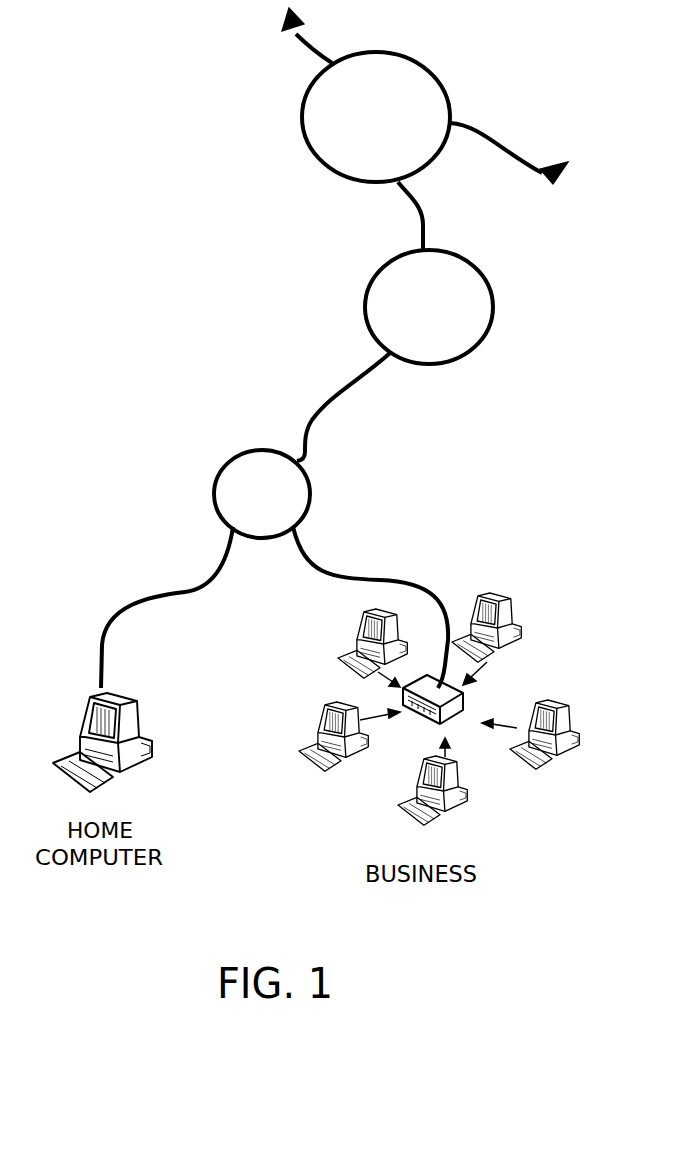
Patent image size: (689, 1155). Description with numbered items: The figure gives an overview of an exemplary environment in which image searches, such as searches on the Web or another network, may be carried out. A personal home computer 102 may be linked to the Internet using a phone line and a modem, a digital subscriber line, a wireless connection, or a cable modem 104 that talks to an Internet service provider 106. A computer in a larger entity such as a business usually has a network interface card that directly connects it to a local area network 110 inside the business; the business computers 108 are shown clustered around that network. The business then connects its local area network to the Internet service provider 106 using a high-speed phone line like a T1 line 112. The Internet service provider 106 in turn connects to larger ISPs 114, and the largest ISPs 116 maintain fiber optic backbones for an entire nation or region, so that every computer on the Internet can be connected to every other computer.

The personal home computer 102 is at (150, 762).
The cable modem 104 is at (180, 590).
The Internet service provider (ISP) 106 is at (262, 451).
The business computers 108 is at (475, 797).
The local area network (LAN) 110 is at (470, 695).
The T1 line 112 is at (378, 575).
The larger ISPs 114 is at (487, 282).
The largest ISPs 116 is at (448, 100).